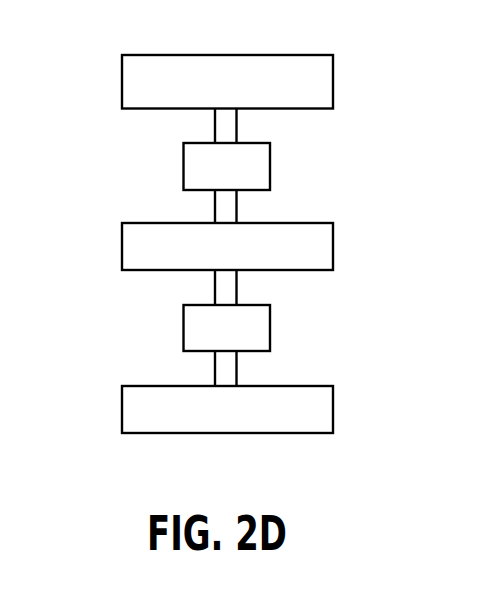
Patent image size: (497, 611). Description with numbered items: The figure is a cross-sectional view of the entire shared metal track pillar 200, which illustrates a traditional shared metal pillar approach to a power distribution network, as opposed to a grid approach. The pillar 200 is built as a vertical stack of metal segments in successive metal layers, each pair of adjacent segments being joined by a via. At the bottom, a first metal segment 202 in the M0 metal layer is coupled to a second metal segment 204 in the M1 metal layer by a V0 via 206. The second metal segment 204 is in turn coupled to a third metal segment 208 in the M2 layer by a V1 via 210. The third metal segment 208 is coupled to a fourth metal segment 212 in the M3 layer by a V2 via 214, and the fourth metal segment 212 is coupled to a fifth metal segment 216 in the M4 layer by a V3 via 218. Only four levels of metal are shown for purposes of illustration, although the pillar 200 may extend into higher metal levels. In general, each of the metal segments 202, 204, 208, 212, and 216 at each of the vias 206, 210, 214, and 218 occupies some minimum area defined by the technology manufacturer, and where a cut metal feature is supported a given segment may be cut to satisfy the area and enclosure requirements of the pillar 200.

The pillar 200 is at (338, 54).
The first metal segment 202 is at (122, 407).
The second metal segment 204 is at (183, 333).
The V0 via 206 is at (215, 368).
The third metal segment 208 is at (122, 243).
The V1 via 210 is at (215, 293).
The fourth metal segment 212 is at (183, 158).
The V2 via 214 is at (215, 207).
The fifth metal segment 216 is at (122, 92).
The V3 via 218 is at (215, 131).